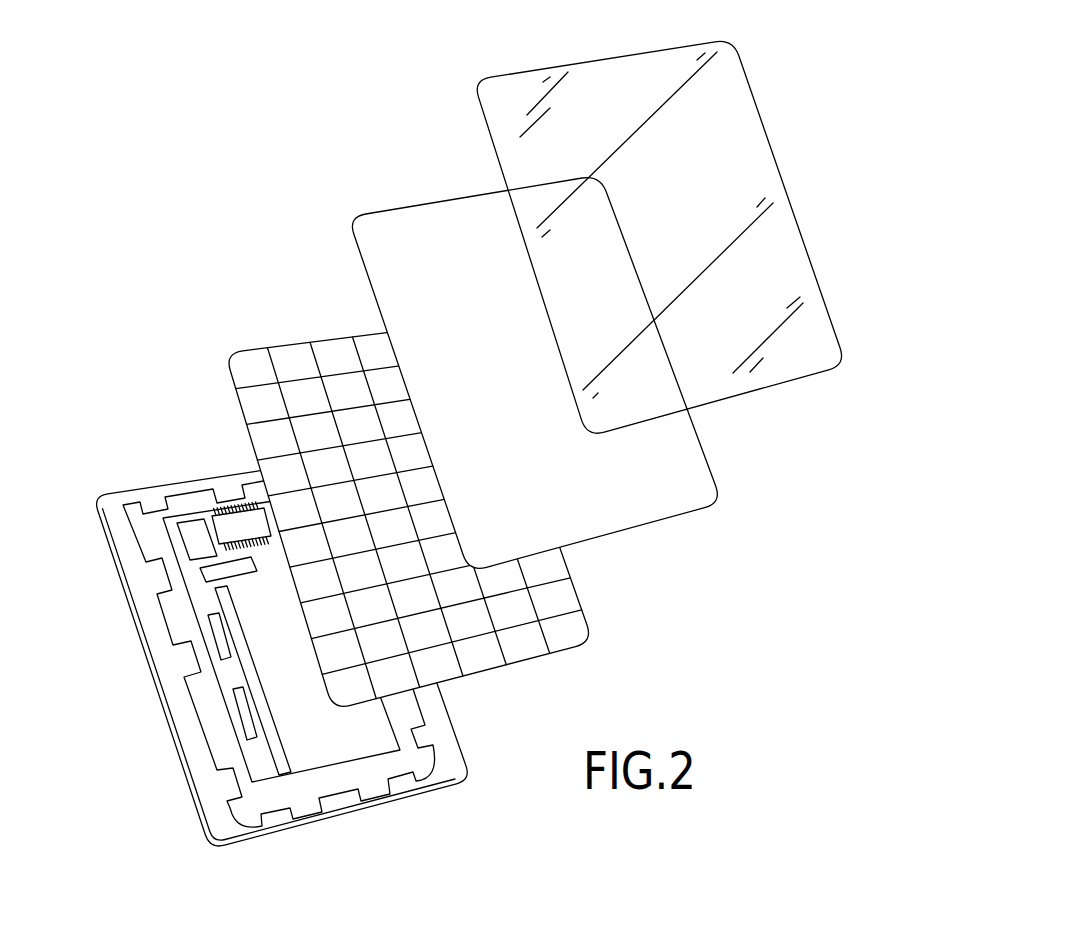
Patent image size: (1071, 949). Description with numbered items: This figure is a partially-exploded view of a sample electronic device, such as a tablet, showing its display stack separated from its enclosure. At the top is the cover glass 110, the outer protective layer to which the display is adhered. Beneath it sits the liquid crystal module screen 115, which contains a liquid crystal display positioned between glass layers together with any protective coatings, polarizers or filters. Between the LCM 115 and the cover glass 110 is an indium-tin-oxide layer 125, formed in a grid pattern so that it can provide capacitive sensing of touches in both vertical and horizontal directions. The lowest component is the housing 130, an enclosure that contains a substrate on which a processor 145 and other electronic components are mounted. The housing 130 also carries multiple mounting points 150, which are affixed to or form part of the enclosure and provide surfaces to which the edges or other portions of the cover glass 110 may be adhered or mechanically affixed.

The cover glass 110 is at (481, 121).
The liquid crystal module (LCM) screen 115 is at (360, 267).
The indium-tin-oxide (ITO) layer 125 is at (223, 388).
The housing 130 is at (103, 530).
The processor 145 is at (227, 532).
The mounting points 150 is at (225, 492).